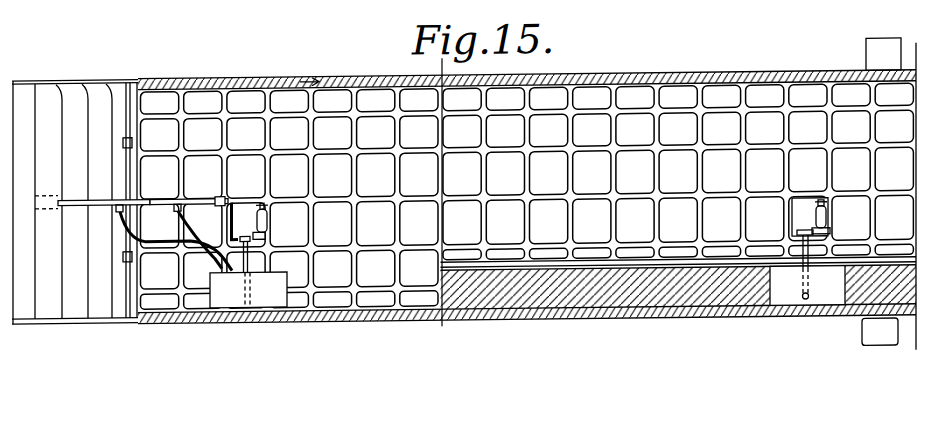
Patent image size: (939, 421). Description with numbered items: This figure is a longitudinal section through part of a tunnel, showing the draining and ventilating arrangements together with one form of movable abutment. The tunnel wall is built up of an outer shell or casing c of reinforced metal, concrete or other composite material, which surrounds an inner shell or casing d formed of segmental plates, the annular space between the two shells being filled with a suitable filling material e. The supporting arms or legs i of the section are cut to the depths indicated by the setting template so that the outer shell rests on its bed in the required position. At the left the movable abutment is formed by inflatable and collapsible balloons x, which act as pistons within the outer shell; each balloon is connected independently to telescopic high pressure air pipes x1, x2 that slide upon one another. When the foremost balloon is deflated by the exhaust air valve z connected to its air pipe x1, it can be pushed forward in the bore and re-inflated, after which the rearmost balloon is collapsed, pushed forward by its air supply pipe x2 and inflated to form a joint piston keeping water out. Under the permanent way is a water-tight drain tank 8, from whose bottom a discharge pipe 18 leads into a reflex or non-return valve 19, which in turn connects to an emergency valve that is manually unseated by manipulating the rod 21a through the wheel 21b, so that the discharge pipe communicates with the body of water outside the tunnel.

The inflatable and collapsible balloons x is at (100, 86).
The telescopic high pressure air pipe x1 is at (77, 194).
The telescopic high pressure air supply pipe x2 is at (155, 195).
The exhaust air valve z is at (231, 198).
The filling material e is at (717, 75).
The outer shell or casing c is at (748, 75).
The inner shell or casing d is at (792, 75).
The supporting arms or legs i is at (880, 68).
The drain tank 8 is at (833, 297).
The discharge pipe 18 is at (794, 264).
The reflex or non-return valve 19 is at (797, 229).
The rod 21a is at (829, 233).
The wheel 21b is at (821, 207).